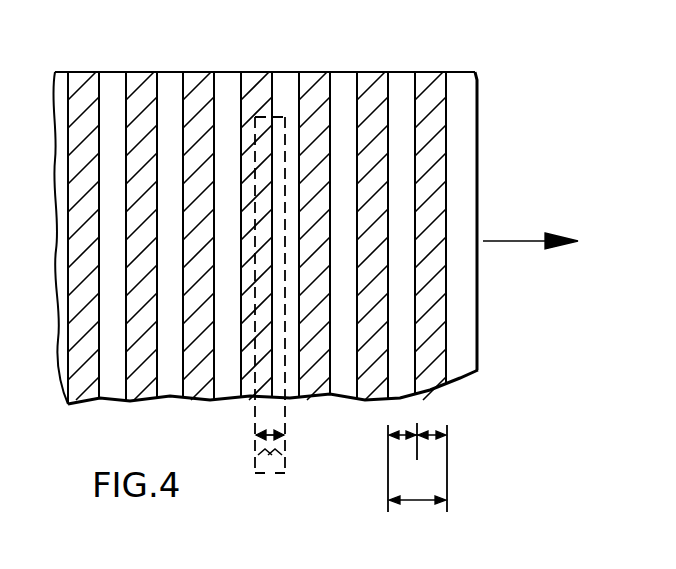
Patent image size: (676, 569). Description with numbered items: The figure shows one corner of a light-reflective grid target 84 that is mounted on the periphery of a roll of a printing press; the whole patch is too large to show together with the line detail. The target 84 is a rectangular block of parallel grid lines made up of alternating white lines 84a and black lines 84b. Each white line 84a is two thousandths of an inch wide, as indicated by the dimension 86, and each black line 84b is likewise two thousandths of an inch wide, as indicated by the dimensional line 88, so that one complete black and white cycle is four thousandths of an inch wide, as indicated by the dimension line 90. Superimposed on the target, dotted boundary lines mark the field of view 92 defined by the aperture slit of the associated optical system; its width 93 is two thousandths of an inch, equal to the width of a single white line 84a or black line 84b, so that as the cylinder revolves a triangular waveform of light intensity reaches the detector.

The target 84 is at (478, 178).
The white line 84a is at (398, 72).
The black line 84b is at (430, 72).
The dimension 86 is at (392, 440).
The dimensional line 88 is at (432, 433).
The dimension line 90 is at (425, 497).
The field of view 92 is at (253, 416).
The width of the field of view 93 is at (270, 434).